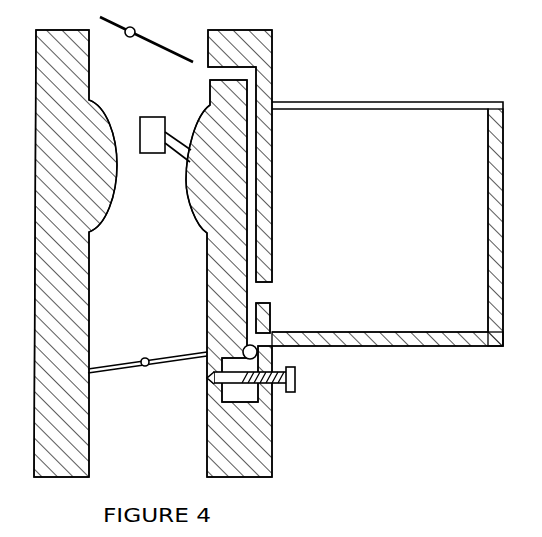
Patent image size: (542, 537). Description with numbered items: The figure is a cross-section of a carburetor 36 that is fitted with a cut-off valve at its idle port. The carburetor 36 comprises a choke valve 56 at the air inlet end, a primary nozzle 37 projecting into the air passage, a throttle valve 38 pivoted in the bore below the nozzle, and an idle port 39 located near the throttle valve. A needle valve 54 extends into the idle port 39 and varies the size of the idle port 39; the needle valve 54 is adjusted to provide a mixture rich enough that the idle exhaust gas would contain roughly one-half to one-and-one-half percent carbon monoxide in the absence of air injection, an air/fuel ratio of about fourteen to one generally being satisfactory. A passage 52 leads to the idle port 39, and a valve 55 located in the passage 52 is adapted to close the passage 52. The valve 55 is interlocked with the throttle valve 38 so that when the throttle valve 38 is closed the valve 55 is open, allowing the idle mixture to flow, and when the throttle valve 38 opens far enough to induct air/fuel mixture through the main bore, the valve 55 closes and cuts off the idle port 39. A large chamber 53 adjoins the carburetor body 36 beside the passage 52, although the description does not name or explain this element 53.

The carburetor 36 is at (257, 32).
The primary nozzle 37 is at (155, 116).
The throttle valve 38 is at (127, 362).
The idle port 39 is at (203, 378).
The passage 52 is at (253, 321).
The reservoir 53 is at (387, 224).
The needle valve 54 is at (280, 387).
The valve 55 is at (258, 351).
The choke valve 56 is at (165, 43).